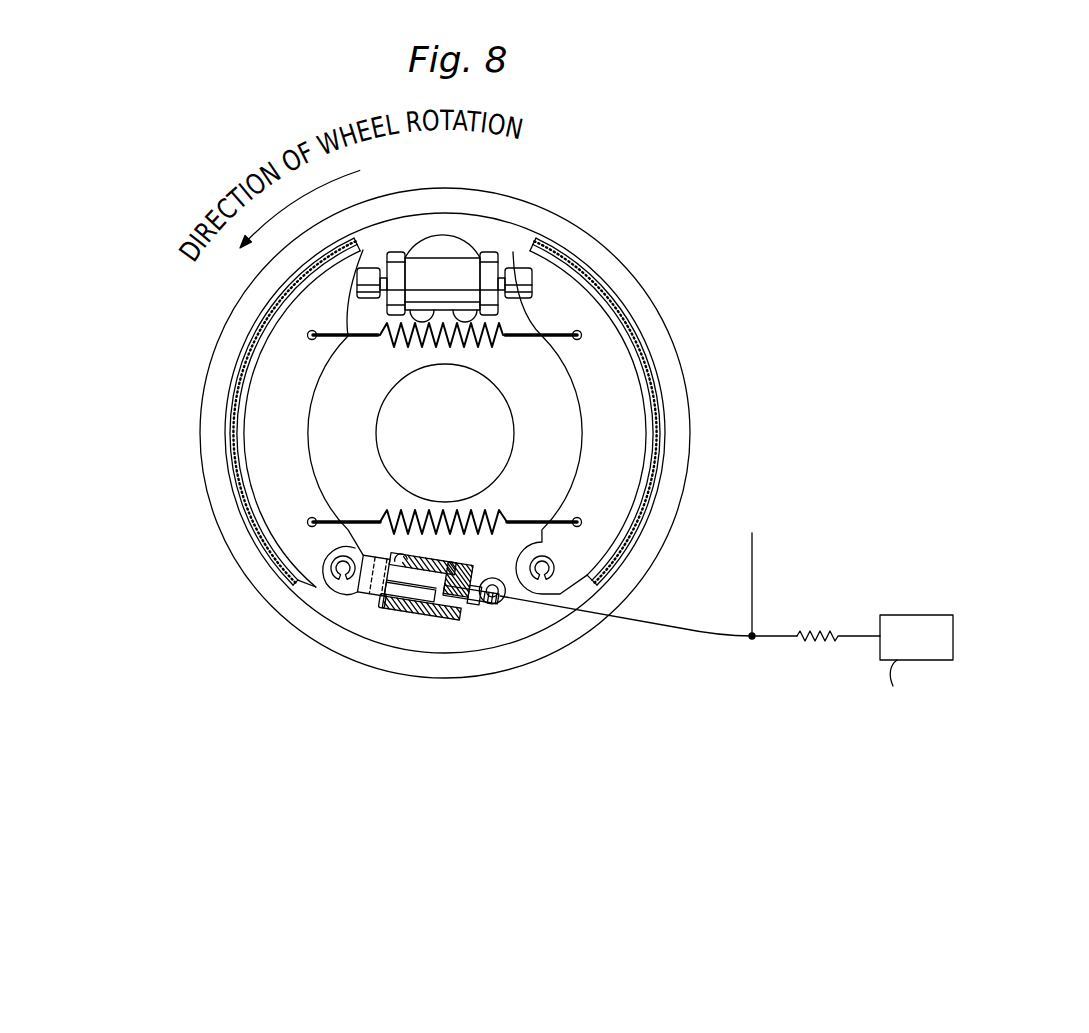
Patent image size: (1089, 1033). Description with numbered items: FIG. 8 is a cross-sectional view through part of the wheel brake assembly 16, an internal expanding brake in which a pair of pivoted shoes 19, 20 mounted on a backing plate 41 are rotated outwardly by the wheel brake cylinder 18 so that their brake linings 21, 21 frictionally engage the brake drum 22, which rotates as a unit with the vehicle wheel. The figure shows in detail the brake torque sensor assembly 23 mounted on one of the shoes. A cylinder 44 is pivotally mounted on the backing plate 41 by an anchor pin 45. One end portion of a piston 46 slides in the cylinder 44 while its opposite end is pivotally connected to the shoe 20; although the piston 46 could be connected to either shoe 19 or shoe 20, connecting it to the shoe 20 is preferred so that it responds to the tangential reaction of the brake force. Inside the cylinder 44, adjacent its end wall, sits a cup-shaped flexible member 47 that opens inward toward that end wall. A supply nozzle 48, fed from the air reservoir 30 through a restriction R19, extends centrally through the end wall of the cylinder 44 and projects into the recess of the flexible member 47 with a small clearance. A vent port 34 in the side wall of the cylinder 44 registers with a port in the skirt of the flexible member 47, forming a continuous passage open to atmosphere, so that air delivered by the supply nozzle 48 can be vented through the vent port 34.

The wheel brake assembly 16 is at (548, 653).
The wheel brake cylinder 18 is at (430, 272).
The brake shoe 19 is at (633, 419).
The brake shoe 20 is at (266, 413).
The brake lining 21 is at (240, 470).
The brake drum 22 is at (223, 360).
The brake torque sensor assembly 23 is at (414, 638).
The air reservoir 30 is at (938, 630).
The vent port 34 is at (460, 572).
The backing plate 41 is at (582, 632).
The cylinder 44 is at (466, 600).
The anchor pin 45 is at (498, 600).
The piston 46 is at (373, 597).
The cup-shaped flexible member 47 is at (452, 604).
The supply nozzle 48 is at (472, 598).
The restriction R19 is at (815, 643).